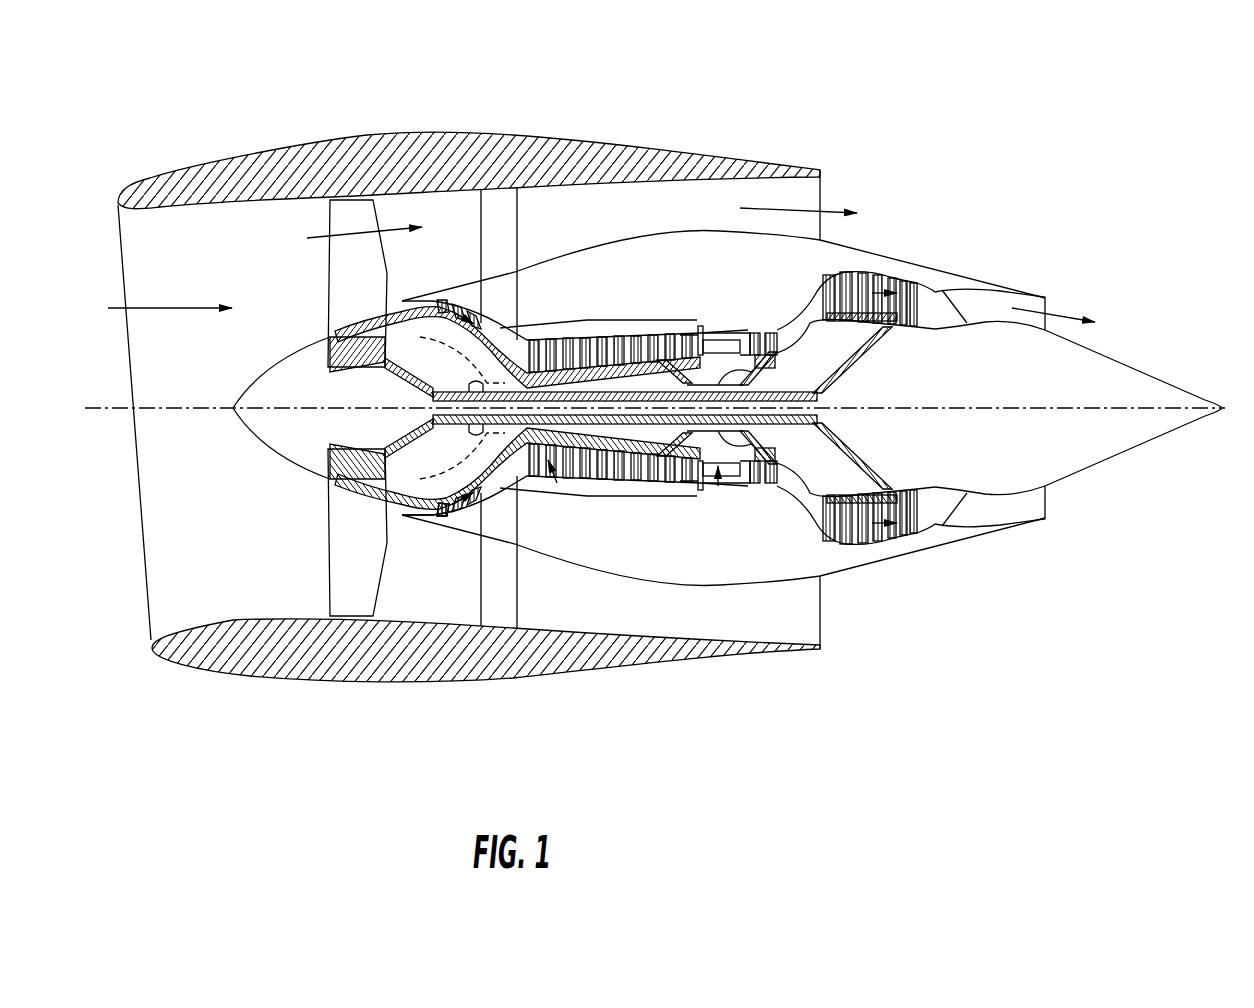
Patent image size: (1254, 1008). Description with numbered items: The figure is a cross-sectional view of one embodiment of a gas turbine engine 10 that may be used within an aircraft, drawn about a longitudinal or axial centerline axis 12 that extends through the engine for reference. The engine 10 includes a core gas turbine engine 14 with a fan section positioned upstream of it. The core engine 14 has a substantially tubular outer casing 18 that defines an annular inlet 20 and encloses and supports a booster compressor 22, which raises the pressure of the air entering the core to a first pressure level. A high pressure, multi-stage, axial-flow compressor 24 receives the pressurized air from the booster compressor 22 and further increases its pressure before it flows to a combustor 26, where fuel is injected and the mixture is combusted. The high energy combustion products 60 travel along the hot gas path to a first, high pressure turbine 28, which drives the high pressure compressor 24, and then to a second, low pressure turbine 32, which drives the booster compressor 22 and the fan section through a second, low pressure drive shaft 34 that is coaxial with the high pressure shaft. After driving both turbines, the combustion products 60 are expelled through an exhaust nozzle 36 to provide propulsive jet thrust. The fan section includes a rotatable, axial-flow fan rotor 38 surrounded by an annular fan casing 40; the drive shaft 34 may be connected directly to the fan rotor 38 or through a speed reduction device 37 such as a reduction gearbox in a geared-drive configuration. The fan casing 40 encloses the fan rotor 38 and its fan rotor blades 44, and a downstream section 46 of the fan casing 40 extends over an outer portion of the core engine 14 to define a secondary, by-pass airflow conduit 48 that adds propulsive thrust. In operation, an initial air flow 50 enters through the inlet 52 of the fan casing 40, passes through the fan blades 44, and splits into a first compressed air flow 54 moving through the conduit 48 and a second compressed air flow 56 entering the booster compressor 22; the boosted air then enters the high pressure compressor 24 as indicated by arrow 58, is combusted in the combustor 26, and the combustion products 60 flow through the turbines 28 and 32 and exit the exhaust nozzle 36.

The gas turbine engine 10 is at (962, 148).
The longitudinal or axial centerline axis 12 is at (987, 395).
The core gas turbine engine 14 is at (372, 102).
The outer casing 18 is at (676, 573).
The annular inlet 20 is at (440, 512).
The booster compressor 22 is at (485, 478).
The high pressure compressor 24 is at (557, 483).
The combustor 26 is at (718, 488).
The first (high pressure) turbine 28 is at (830, 474).
The second (low pressure) turbine 32 is at (963, 520).
The second (low pressure) drive shaft 34 is at (478, 388).
The exhaust nozzle 36 is at (1050, 307).
The speed reduction device 37 is at (450, 401).
The fan rotor 38 is at (362, 400).
The fan casing 40 is at (372, 685).
The fan rotor blades 44 is at (518, 216).
The downstream section of the fan casing 46 is at (742, 158).
The by-pass airflow conduit 48 is at (617, 234).
The initial air flow 50 is at (168, 305).
The inlet 52 is at (148, 630).
The first compressed air flow 54 is at (347, 229).
The second compressed air flow 56 is at (410, 300).
The air flow entering high pressure compressor 58 is at (543, 357).
The combustion products 60 is at (800, 321).